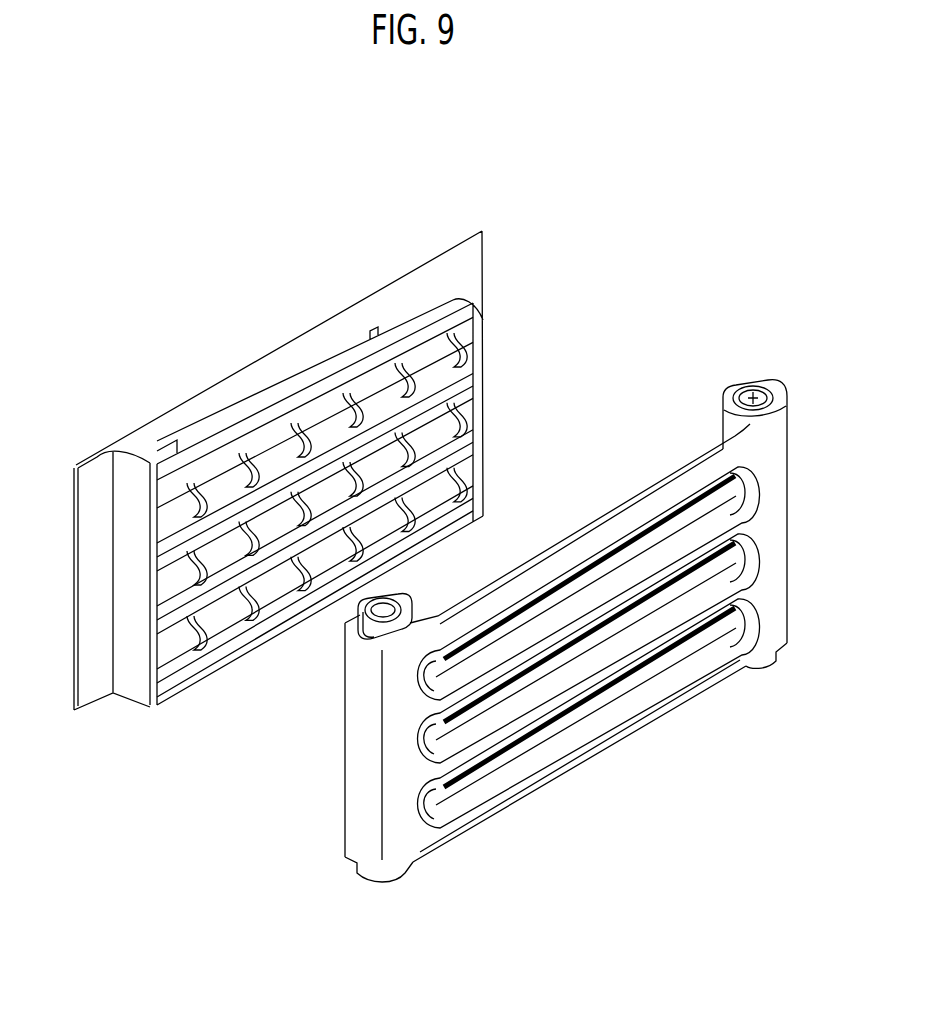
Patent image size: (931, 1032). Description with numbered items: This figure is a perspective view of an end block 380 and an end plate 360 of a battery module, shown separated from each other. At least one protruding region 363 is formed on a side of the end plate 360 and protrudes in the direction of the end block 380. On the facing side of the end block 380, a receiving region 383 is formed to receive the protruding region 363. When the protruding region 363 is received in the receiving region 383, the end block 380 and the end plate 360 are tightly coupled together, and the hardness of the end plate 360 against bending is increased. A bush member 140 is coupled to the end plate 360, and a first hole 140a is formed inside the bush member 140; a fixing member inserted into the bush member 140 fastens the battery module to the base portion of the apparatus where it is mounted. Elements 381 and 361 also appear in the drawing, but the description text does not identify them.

The end block 380 is at (195, 404).
The side bracket 381 is at (125, 557).
The receiving region 383 is at (460, 368).
The end plate 360 is at (557, 621).
The header pipe 361 is at (357, 770).
The protruding region 363 is at (737, 497).
The bush member 140 is at (707, 404).
The first hole 140a is at (753, 398).